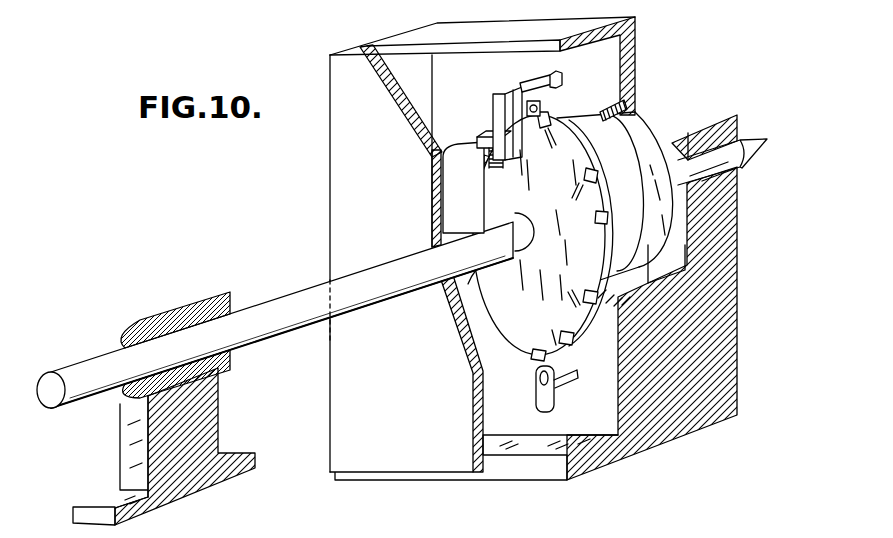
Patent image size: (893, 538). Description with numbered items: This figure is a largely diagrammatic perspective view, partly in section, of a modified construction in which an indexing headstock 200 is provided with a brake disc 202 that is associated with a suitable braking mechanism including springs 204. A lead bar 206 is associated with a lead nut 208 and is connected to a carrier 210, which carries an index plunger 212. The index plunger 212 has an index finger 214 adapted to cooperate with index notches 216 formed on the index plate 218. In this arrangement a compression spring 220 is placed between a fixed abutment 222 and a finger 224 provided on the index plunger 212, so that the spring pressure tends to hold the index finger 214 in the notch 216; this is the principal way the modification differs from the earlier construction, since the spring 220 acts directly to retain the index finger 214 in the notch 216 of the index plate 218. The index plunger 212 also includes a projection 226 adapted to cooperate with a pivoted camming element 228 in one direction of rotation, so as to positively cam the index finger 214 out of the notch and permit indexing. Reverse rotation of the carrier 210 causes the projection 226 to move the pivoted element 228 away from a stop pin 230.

The indexing headstock 200 is at (722, 387).
The brake disc 202 is at (613, 152).
The springs 204 is at (615, 100).
The lead bar 206 is at (295, 328).
The lead nut 208 is at (230, 293).
The carrier 210 is at (458, 148).
The index plunger 212 is at (522, 90).
The index finger 214 is at (540, 108).
The index notches 216 is at (548, 142).
The index plate 218 is at (598, 222).
The compression spring 220 is at (492, 168).
The fixed abutment 222 is at (487, 153).
The finger 224 is at (475, 208).
The projection 226 is at (555, 77).
The pivoted camming element 228 is at (535, 398).
The stop pin 230 is at (560, 385).